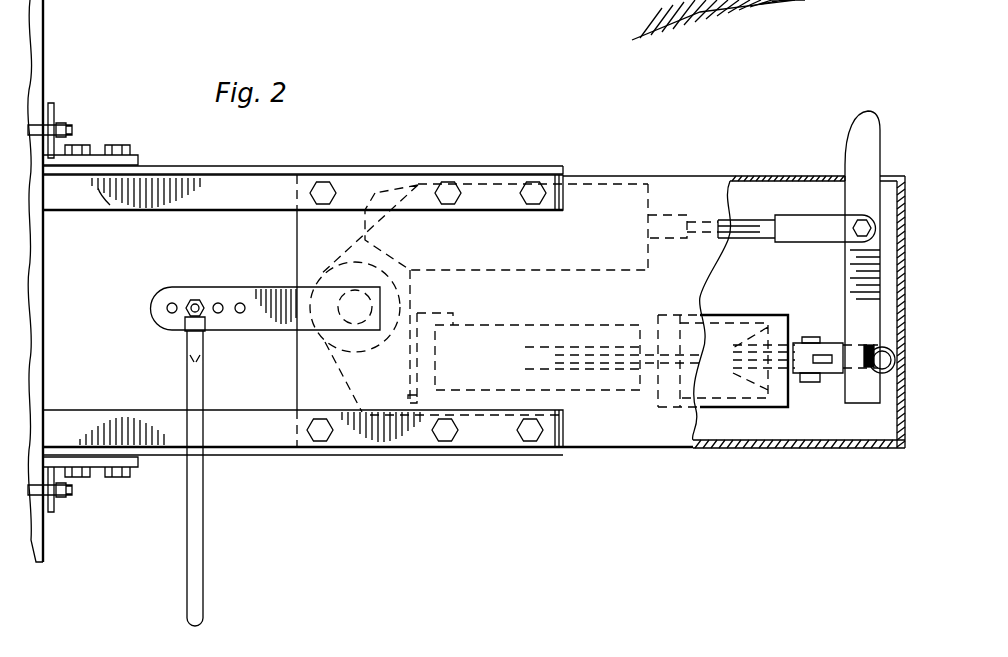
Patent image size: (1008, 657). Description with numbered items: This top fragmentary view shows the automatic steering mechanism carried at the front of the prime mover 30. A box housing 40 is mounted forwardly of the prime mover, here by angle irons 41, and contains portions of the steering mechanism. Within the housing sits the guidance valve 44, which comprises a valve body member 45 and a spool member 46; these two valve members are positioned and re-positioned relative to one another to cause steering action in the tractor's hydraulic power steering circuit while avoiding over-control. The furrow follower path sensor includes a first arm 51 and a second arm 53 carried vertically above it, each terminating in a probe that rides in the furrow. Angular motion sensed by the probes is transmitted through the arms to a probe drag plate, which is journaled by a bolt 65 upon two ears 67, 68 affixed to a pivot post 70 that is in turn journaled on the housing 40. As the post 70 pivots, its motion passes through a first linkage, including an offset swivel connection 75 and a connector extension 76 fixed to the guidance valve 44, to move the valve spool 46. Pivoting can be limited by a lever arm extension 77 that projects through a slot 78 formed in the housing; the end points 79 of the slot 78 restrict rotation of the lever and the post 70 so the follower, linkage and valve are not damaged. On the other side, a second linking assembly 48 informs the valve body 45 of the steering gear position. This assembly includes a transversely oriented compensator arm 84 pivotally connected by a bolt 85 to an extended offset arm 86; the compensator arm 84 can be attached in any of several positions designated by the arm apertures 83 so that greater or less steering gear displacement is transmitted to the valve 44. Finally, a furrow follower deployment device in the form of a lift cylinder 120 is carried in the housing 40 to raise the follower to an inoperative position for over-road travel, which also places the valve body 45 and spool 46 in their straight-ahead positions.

The prime mover 30 is at (45, 50).
The box housing 40 is at (368, 278).
The angle irons 41 is at (113, 200).
The guidance valve 44 is at (628, 172).
The valve body member 45 is at (552, 240).
The spool member 46 is at (675, 212).
The second linking assembly 48 is at (266, 427).
The first arm 51 is at (538, 350).
The second arm 53 is at (630, 363).
The bolt 65 is at (807, 382).
The ear 67 is at (833, 373).
The ear 68 is at (825, 343).
The pivot post 70 is at (882, 373).
The offset swivel connection 75 is at (808, 227).
The connector extension 76 is at (745, 240).
The lever arm extension 77 is at (865, 143).
The slot 78 is at (843, 177).
The end points 79 is at (840, 177).
The arm apertures 83 is at (240, 298).
The compensator arm 84 is at (197, 542).
The bolt 85 is at (192, 299).
The offset arm 86 is at (263, 290).
The lift cylinder 120 is at (623, 363).